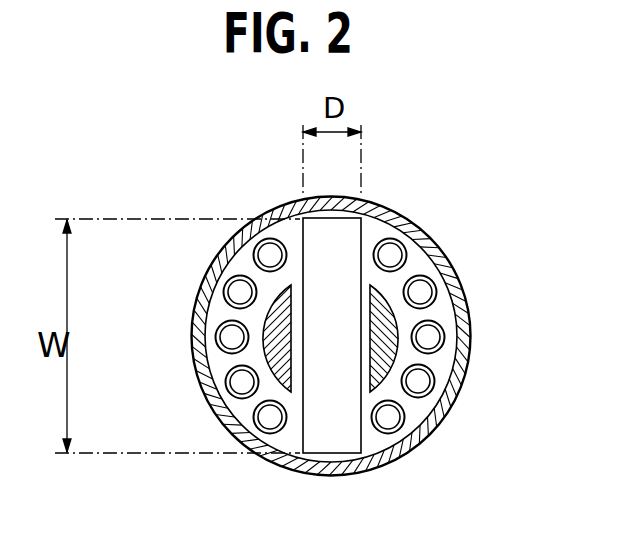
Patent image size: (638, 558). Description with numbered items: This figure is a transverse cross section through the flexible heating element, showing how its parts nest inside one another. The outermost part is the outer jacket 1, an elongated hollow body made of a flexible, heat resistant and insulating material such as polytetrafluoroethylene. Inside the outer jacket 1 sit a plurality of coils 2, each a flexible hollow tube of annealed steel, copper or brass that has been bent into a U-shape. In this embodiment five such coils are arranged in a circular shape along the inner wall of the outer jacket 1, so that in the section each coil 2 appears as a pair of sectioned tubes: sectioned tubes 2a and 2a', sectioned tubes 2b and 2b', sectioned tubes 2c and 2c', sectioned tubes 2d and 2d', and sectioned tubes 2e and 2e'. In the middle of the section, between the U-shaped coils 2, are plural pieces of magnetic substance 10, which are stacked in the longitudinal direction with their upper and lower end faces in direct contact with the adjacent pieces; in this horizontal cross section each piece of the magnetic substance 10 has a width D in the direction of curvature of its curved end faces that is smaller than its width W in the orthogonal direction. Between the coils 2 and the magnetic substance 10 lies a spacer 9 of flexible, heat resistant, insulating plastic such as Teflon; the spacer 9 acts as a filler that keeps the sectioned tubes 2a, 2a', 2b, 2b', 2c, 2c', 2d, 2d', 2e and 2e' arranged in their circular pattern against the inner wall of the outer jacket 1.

The outer jacket 1 is at (382, 212).
The coil 2 is at (406, 253).
The sectioned tube 2a is at (431, 250).
The sectioned tube 2b is at (461, 289).
The sectioned tube 2c is at (471, 340).
The sectioned tube 2d is at (459, 400).
The sectioned tube 2e is at (424, 450).
The sectioned tube 2a' is at (231, 250).
The sectioned tube 2b' is at (201, 291).
The sectioned tube 2c' is at (190, 340).
The sectioned tube 2d' is at (203, 397).
The sectioned tube 2e' is at (235, 450).
The spacer 9 is at (400, 356).
The magnetic substance 10 is at (348, 454).